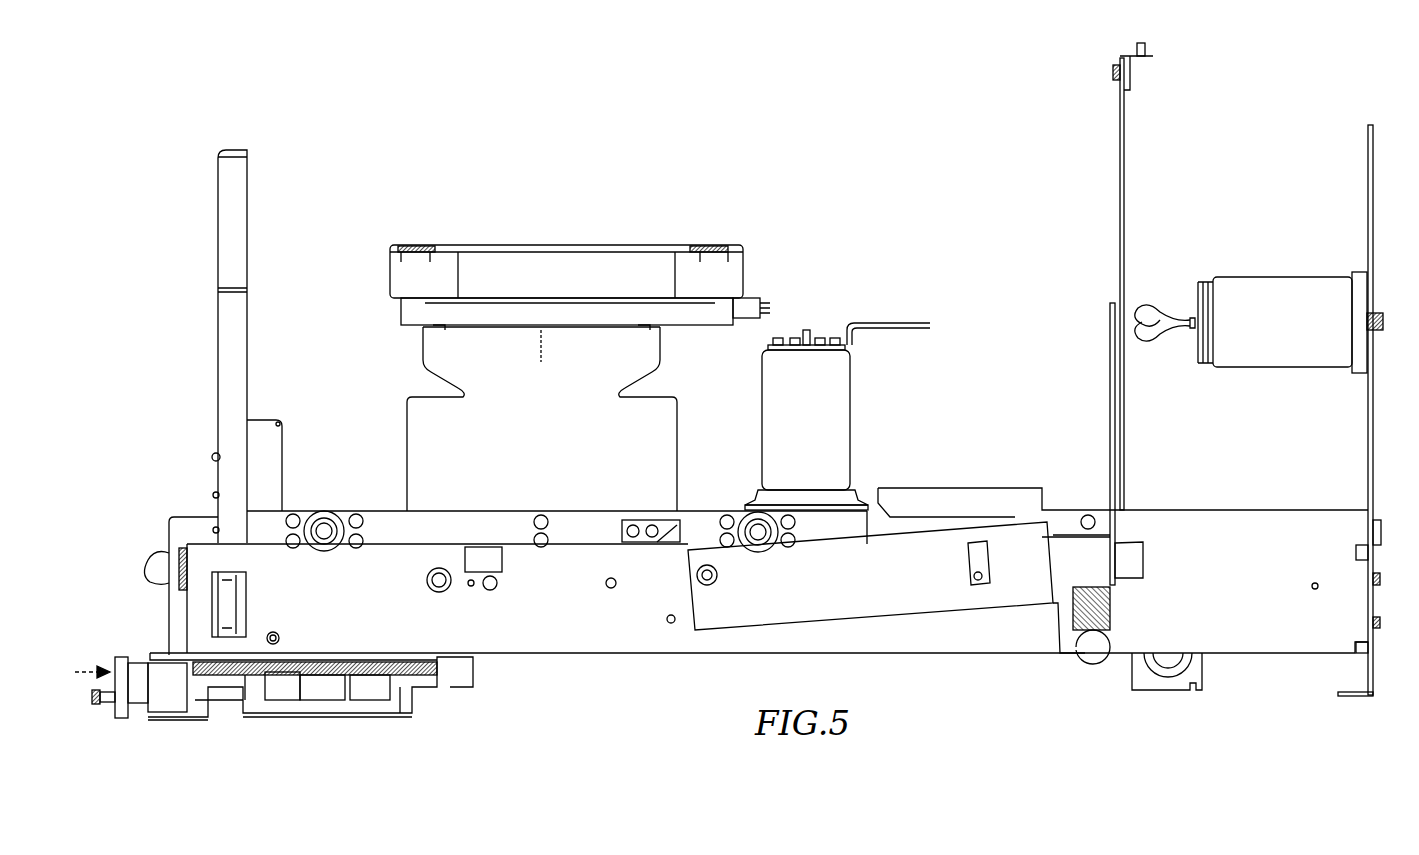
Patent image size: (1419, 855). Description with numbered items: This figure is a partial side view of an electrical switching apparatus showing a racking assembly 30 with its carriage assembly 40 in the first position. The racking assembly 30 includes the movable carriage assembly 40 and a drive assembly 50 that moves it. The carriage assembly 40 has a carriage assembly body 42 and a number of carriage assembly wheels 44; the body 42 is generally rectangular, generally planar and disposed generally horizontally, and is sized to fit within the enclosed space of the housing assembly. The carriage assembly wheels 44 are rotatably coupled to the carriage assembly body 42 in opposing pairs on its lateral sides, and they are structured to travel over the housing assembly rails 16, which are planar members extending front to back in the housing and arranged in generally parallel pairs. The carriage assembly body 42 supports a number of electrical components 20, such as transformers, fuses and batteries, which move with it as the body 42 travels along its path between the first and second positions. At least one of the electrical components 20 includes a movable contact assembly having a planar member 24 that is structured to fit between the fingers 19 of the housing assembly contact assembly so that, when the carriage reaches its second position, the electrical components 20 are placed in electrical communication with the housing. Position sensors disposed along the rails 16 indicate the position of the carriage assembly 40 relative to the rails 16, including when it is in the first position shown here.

The rails 16 is at (638, 620).
The fingers 19 is at (1147, 342).
The electrical components 20 is at (607, 242).
The planar member 24 is at (893, 325).
The racking assembly 30 is at (363, 720).
The carriage assembly 40 is at (214, 240).
The carriage assembly body 42 is at (374, 518).
The carriage assembly wheels 44 is at (326, 543).
The drive assembly 50 is at (85, 668).